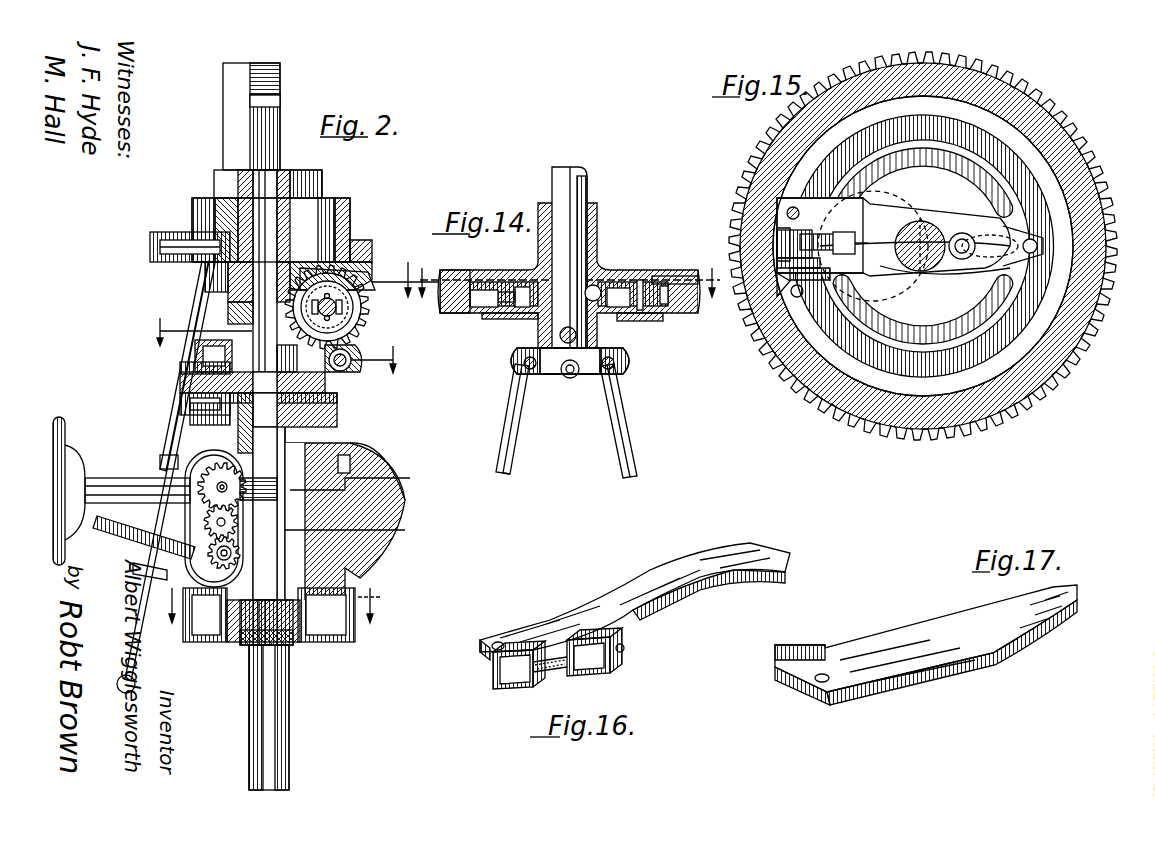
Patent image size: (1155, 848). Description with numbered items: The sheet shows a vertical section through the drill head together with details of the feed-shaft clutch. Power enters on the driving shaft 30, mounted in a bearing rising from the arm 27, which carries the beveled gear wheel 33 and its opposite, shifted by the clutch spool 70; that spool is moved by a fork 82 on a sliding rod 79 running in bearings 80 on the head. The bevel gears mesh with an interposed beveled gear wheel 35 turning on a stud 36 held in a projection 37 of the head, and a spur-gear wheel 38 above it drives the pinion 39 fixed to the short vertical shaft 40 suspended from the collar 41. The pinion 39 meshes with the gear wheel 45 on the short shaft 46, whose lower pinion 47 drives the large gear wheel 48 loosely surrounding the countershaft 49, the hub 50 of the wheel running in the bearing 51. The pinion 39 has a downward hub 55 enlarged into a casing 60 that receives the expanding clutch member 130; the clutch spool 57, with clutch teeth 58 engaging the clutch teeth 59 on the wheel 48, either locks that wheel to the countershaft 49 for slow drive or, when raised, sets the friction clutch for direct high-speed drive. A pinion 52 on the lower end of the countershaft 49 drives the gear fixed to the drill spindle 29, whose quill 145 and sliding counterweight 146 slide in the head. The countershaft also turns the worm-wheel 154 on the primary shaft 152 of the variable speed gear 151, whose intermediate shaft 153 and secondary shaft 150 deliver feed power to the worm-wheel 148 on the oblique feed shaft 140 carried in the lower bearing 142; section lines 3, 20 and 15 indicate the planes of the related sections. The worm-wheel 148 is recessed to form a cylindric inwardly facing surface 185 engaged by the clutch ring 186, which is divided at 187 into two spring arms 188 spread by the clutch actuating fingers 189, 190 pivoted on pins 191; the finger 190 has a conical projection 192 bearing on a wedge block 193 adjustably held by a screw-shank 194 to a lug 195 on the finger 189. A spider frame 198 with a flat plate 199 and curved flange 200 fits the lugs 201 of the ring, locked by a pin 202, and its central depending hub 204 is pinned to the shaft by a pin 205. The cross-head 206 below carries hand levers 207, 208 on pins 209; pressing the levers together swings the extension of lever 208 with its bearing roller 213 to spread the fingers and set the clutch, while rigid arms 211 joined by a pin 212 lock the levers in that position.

In FIG. 2, the sliding counterweight 146 is at (243, 78).
In FIG. 2, the drill spindle quill 145 is at (272, 118).
In FIG. 2, the collar 41 is at (282, 182).
In FIG. 2, the short vertical shaft 40 is at (247, 215).
In FIG. 2, the pinion 39 is at (240, 245).
In FIG. 2, the stud 36 is at (327, 208).
In FIG. 2, the projection of the head 37 is at (345, 215).
In FIG. 2, the spur-gear wheel 38 is at (358, 242).
In FIG. 2, the interposed beveled gear wheel 35 is at (360, 262).
In FIG. 2, the beveled gear wheel 33 is at (350, 282).
In FIG. 2, the gear wheel 45 is at (160, 249).
In FIG. 2, the short shaft 46 is at (205, 272).
In FIG. 2, the casing 60 is at (235, 296).
In FIG. 2, the expanding clutch member 130 is at (232, 300).
In FIG. 2, the hub 55 is at (250, 288).
In FIG. 2, the clutch spool 57 is at (230, 320).
In FIG. 2, the section line 3— 3 is at (270, 347).
In FIG. 2, the clutch teeth 58 is at (250, 349).
In FIG. 2, the clutch teeth 59 is at (200, 370).
In FIG. 2, the pinion 47 is at (210, 377).
In FIG. 2, the clutch spool 70 is at (345, 292).
In FIG. 2, the driving shaft 30 is at (350, 306).
In FIG. 2, the sliding rod 79 is at (356, 318).
In FIG. 2, the fork 82 is at (330, 352).
In FIG. 2, the bearings 80 is at (347, 364).
In FIG. 2, the large gear wheel 48 is at (325, 384).
In FIG. 2, the hub 50 is at (337, 396).
In FIG. 2, the countershaft 49 is at (340, 409).
In FIG. 2, the bearing 51 is at (240, 432).
In FIG. 2, the arm 27 is at (380, 478).
In FIG. 2, the worm-wheel 154 is at (380, 447).
In FIG. 2, the intermediate shaft 153 is at (310, 523).
In FIG. 2, the primary shaft 152 is at (212, 470).
In FIG. 2, the variable speed gear 151 is at (167, 575).
In FIG. 2, the cross-head 206 is at (60, 548).
In FIG. 14, the cross-head 206 is at (625, 465).
In FIG. 2, the worm-wheel 148 is at (140, 518).
In FIG. 14, the worm-wheel 148 is at (662, 312).
In FIG. 15, the worm-wheel 148 is at (915, 262).
In FIG. 2, the lower bearing 142 is at (160, 465).
In FIG. 2, the hand lever 208 is at (140, 655).
In FIG. 14, the hand lever 208 is at (637, 463).
In FIG. 2, the secondary shaft 150 is at (195, 590).
In FIG. 2, the section line 20— 20 is at (274, 605).
In FIG. 2, the pinion 52 is at (245, 625).
In FIG. 2, the drill spindle 29 is at (278, 689).
In FIG. 2, the section line 15— 15 is at (406, 279).
In FIG. 14, the section line 15— 15 is at (567, 273).
In FIG. 14, the feed shaft 140 is at (583, 180).
In FIG. 14, the curved flange 200 is at (640, 285).
In FIG. 14, the lug 195 is at (520, 290).
In FIG. 15, the lug 195 is at (850, 243).
In FIG. 16, the lug 195 is at (605, 670).
In FIG. 14, the flat plate 199 is at (485, 313).
In FIG. 14, the cylindric inwardly facing surface 185 is at (455, 305).
In FIG. 15, the cylindric inwardly facing surface 185 is at (1010, 115).
In FIG. 14, the wedge block 193 is at (438, 325).
In FIG. 15, the wedge block 193 is at (778, 238).
In FIG. 16, the wedge block 193 is at (512, 686).
In FIG. 14, the bearing roller 213 is at (598, 288).
In FIG. 15, the bearing roller 213 is at (970, 240).
In FIG. 14, the clutch actuating finger 189 is at (612, 272).
In FIG. 15, the clutch actuating finger 189 is at (920, 212).
In FIG. 16, the clutch actuating finger 189 is at (655, 568).
In FIG. 14, the spider frame 198 is at (630, 315).
In FIG. 15, the spider frame 198 is at (973, 340).
In FIG. 14, the clutch member or ring 186 is at (640, 318).
In FIG. 15, the clutch member or ring 186 is at (1034, 246).
In FIG. 14, the central depending hub 204 is at (555, 338).
In FIG. 14, the pin 205 is at (520, 370).
In FIG. 14, the pins 209 is at (526, 368).
In FIG. 14, the pin 212 is at (570, 378).
In FIG. 14, the rigid arms 211 is at (590, 378).
In FIG. 14, the hand lever 207 is at (510, 476).
In FIG. 15, the lugs 201 is at (845, 168).
In FIG. 15, the spring arms 188 is at (795, 180).
In FIG. 15, the pivot pins 191 is at (786, 211).
In FIG. 16, the pivot pins 191 is at (498, 642).
In FIG. 17, the pivot pins 191 is at (818, 682).
In FIG. 15, the conical shaped projection 192 is at (778, 254).
In FIG. 17, the conical shaped projection 192 is at (800, 646).
In FIG. 15, the division 187 is at (780, 264).
In FIG. 15, the screw-shank 194 is at (835, 228).
In FIG. 16, the screw-shank 194 is at (558, 668).
In FIG. 15, the clutch actuating finger 190 is at (935, 280).
In FIG. 17, the clutch actuating finger 190 is at (950, 652).
In FIG. 15, the pin 202 is at (1035, 242).